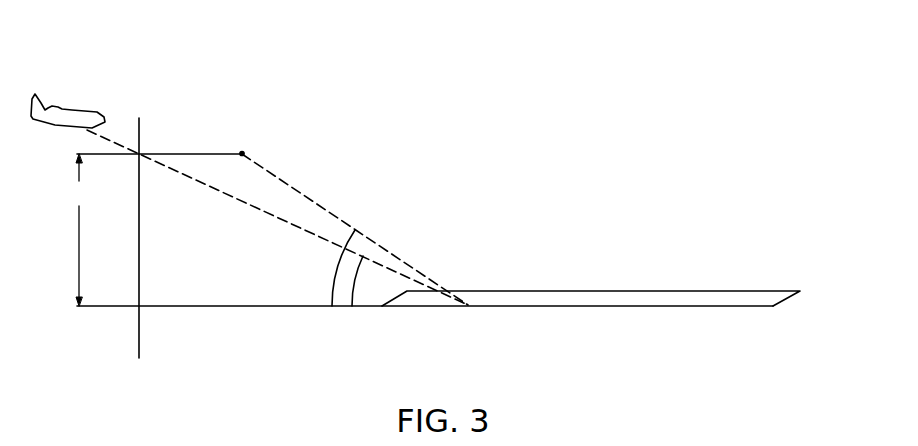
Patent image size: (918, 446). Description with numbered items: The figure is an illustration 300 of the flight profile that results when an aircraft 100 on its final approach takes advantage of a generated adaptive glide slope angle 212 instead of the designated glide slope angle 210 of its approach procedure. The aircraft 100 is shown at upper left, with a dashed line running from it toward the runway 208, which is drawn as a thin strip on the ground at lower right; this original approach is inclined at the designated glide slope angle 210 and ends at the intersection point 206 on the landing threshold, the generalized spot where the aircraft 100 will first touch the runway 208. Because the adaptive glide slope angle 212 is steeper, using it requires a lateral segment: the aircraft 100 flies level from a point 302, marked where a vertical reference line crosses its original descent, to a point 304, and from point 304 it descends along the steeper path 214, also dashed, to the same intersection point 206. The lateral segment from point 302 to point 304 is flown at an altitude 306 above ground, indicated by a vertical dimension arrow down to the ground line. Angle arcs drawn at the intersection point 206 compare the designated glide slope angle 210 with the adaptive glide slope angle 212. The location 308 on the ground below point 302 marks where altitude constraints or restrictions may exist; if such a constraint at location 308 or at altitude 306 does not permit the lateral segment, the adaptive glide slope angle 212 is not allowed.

The aircraft 100 is at (80, 109).
The intersection point 206 is at (466, 303).
The runway 208 is at (615, 290).
The designated glide slope angle 210 is at (362, 257).
The adaptive glide slope angle 212 is at (333, 283).
The path 214 is at (308, 197).
The illustration 300 is at (562, 103).
The point 302 is at (136, 158).
The point 304 is at (245, 148).
The altitude 306 is at (78, 230).
The location 308 is at (143, 306).